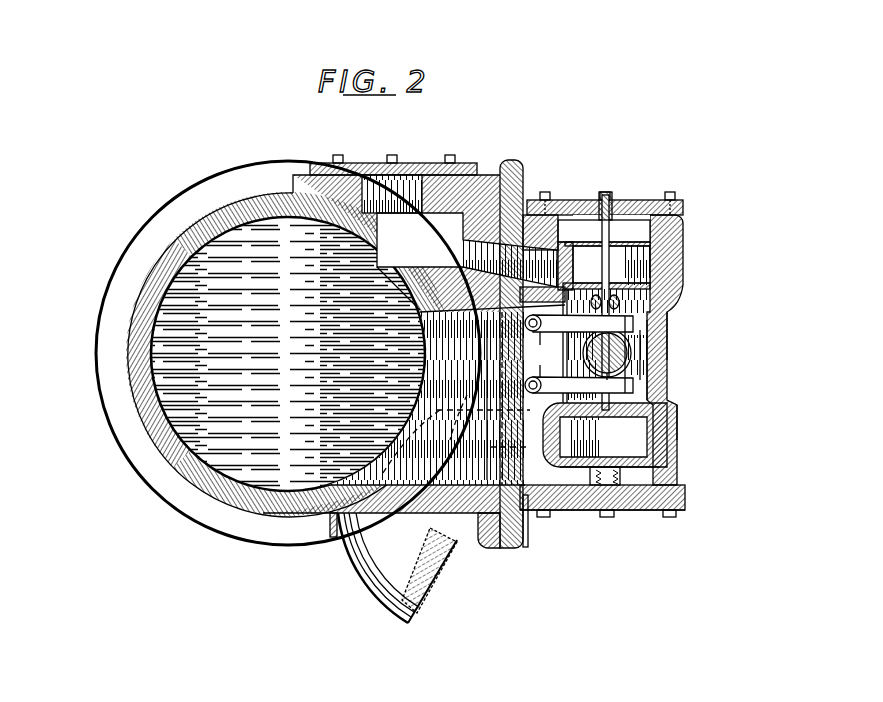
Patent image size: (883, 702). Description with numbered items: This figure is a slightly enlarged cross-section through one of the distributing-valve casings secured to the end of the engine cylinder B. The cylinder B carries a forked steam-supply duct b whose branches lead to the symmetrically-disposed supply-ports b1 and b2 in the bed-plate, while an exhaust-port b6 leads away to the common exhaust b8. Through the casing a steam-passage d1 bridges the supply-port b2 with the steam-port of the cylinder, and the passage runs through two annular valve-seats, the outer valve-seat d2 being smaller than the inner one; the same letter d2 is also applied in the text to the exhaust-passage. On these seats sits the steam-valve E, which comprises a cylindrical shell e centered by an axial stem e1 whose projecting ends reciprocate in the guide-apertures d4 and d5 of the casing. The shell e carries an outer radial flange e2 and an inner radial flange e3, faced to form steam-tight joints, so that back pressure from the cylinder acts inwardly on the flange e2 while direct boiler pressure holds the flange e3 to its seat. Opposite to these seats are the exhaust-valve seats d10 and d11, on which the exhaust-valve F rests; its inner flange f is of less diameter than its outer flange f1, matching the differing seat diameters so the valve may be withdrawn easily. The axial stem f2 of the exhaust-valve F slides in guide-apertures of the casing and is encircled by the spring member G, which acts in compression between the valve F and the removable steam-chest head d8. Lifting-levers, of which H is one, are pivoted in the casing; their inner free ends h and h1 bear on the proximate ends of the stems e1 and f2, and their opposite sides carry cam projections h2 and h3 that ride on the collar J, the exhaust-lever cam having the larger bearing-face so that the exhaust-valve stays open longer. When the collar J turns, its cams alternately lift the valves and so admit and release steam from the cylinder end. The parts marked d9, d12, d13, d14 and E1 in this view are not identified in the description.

The cylinder B is at (180, 206).
The steam-supply duct b is at (370, 175).
The supply-port b1 is at (487, 345).
The supply-port b2 is at (523, 178).
The exhaust-port b6 is at (528, 512).
The common exhaust b8 is at (433, 577).
The steam-passage d1 is at (585, 198).
The outer valve-seat d2 is at (680, 417).
The guide-aperture d4 is at (612, 200).
The guide-aperture d5 is at (660, 315).
The steam-chest head d8 is at (677, 260).
The housing wall d9 is at (670, 300).
The exhaust-valve seat d10 is at (693, 400).
The exhaust-valve seat d11 is at (680, 460).
The housing inner wall lower d12 is at (650, 360).
The bolt nut d13 is at (610, 512).
The bottom plate d14 is at (590, 512).
The cylindrical shell e is at (604, 250).
The axial stem e1 is at (623, 232).
The outer radial flange e2 is at (683, 200).
The inner radial flange e3 is at (660, 285).
The steam-valve E is at (680, 227).
The lower lever arm E1 is at (535, 385).
The inner flange f is at (703, 377).
The outer flange f1 is at (680, 473).
The axial stem f2 is at (640, 380).
The exhaust-valve F is at (677, 400).
The spring member G is at (680, 482).
The inner free end of lifting-lever h is at (660, 323).
The inner free end of lifting-lever h1 is at (662, 355).
The cam projection h2 is at (495, 345).
The cam projection h3 is at (534, 366).
The lifting-lever H is at (525, 325).
The collar J is at (520, 340).